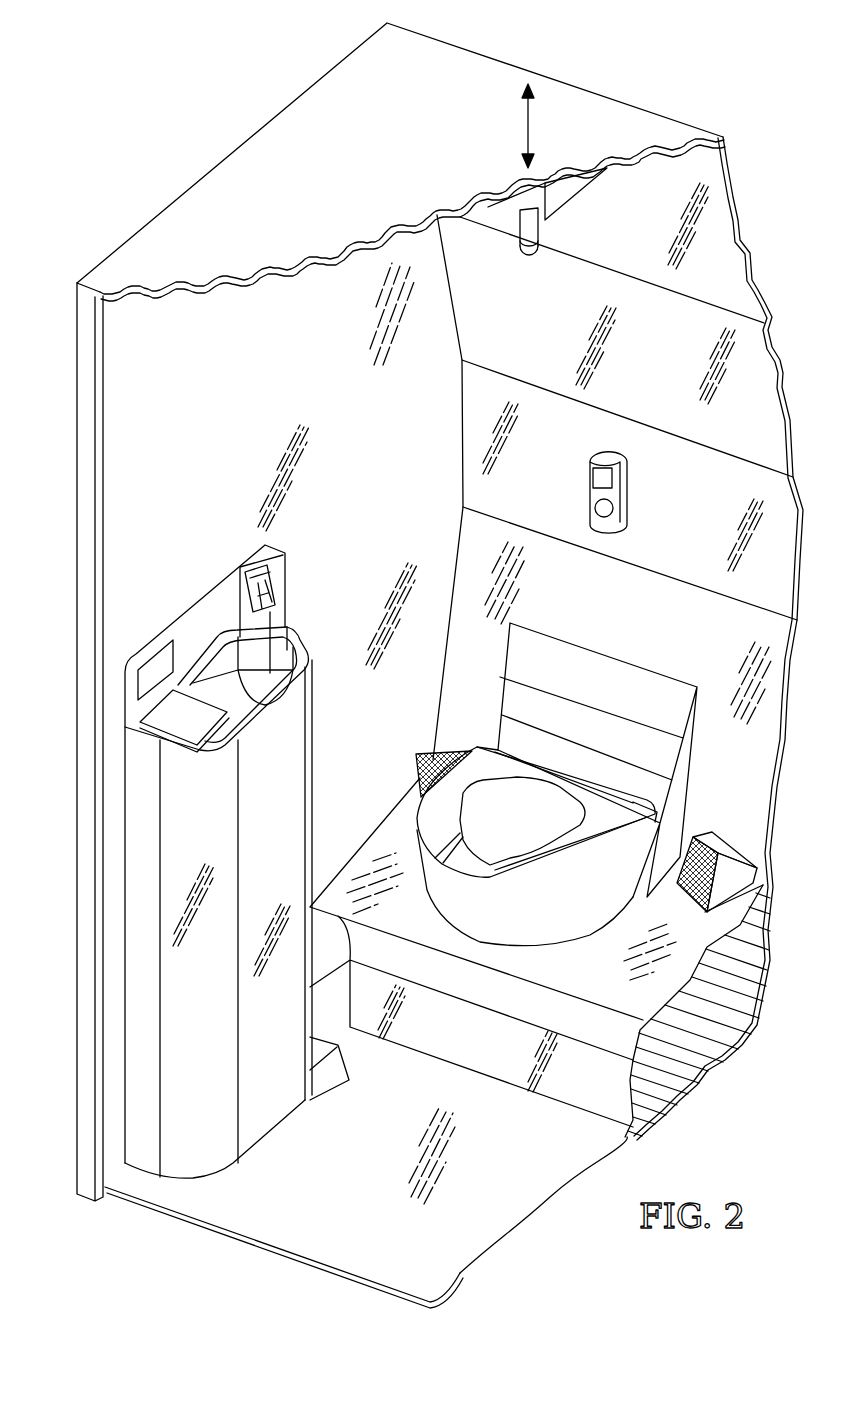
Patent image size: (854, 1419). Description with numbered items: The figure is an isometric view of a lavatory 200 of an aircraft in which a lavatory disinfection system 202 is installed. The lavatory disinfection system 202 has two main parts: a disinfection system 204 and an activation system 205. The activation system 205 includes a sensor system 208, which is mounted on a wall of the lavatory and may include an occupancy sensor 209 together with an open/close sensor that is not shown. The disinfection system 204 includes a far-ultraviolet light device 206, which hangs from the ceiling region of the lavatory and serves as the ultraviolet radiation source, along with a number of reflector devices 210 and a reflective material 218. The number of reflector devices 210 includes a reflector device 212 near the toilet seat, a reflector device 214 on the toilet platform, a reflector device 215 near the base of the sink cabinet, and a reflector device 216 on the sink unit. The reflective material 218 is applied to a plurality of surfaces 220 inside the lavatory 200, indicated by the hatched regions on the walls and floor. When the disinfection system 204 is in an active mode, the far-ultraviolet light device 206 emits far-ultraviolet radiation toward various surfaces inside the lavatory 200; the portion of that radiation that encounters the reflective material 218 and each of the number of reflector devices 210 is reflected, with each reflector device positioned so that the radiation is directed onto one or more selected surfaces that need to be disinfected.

The lavatory 200 is at (160, 428).
The lavatory disinfection system 202 is at (503, 255).
The disinfection system 204 is at (545, 230).
The activation system 205 is at (597, 192).
The far-ultraviolet light device 206 is at (540, 270).
The sensor system 208 is at (634, 497).
The occupancy sensor 209 is at (592, 480).
The number of reflector devices 210 is at (406, 768).
The reflector device 212 is at (525, 123).
The reflector device 214 is at (718, 852).
The reflector device 215 is at (332, 1070).
The reflector device 216 is at (153, 665).
The reflective material 218 is at (268, 465).
The plurality of surfaces 220 is at (294, 350).